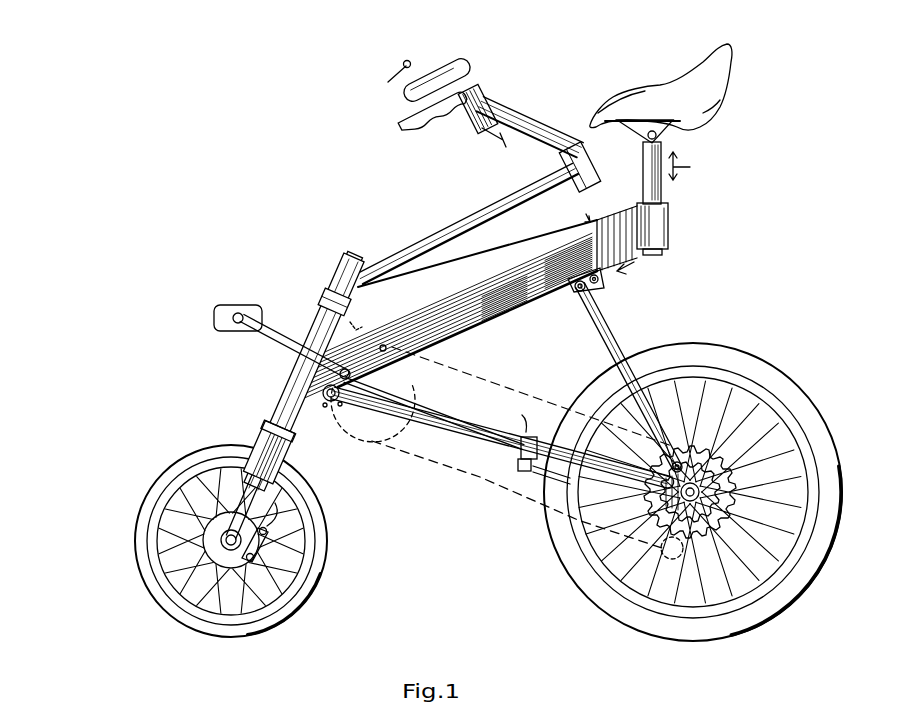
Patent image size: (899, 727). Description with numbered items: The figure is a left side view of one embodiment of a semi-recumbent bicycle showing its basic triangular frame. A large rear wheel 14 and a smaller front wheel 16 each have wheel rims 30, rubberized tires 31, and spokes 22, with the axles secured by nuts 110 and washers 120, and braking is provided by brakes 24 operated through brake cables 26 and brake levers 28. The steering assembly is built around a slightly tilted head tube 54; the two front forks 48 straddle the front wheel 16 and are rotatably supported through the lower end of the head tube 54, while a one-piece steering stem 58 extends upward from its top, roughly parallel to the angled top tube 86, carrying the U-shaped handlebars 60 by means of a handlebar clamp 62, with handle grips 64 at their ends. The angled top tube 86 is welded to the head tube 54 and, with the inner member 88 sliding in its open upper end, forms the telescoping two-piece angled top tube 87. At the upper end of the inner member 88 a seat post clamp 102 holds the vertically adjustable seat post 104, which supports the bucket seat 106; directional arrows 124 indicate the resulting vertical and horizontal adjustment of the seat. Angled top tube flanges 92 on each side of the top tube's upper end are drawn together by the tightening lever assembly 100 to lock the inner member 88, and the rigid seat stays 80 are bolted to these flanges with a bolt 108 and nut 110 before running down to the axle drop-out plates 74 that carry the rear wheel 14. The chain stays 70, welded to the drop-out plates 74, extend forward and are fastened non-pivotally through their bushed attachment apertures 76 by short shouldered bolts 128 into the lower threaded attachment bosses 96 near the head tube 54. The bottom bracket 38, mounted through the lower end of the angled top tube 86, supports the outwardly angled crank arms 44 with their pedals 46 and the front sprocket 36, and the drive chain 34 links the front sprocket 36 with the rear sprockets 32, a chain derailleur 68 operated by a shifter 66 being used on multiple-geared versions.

The rear wheel 14 is at (835, 433).
The front wheel 16 is at (137, 553).
The spokes 22 is at (660, 540).
The brakes 24 is at (203, 533).
The brake cables 26 is at (485, 133).
The brake levers 28 is at (404, 102).
The wheel rims 30 is at (807, 523).
The rubberized tires 31 is at (820, 566).
The rear sprockets 32 is at (735, 460).
The drive chain 34 is at (524, 500).
The front sprocket 36 is at (362, 328).
The bottom bracket 38 is at (302, 368).
The crank arms 44 is at (247, 332).
The pedals 46 is at (233, 305).
The front forks 48 is at (250, 497).
The head tube 54 is at (320, 322).
The steering stem 58 is at (352, 256).
The handlebars 60 is at (507, 112).
The handlebar clamp 62 is at (579, 145).
The handle grips 64 is at (443, 71).
The shifter 66 is at (386, 81).
The chain derailleur 68 is at (666, 560).
The chain stays 70 is at (463, 437).
The axle drop-out plates 74 is at (605, 518).
The bushed attachment aperture 76 is at (358, 428).
The seat stays 80 is at (605, 338).
The angled top tube 86 is at (498, 268).
The two-piece angled top tube 87 is at (576, 208).
The inner member 88 is at (614, 215).
The angled top tube flanges 92 is at (606, 283).
The threaded attachment bosses 96 is at (387, 348).
The tightening lever assembly 100 is at (597, 284).
The seat post clamp 102 is at (670, 228).
The seat post 104 is at (668, 148).
The bucket seat 106 is at (712, 63).
The bolt 108 is at (577, 292).
The nuts 110 is at (700, 491).
The washers 120 is at (727, 481).
The directional arrows 124 is at (690, 170).
The short shouldered bolts 128 is at (342, 408).